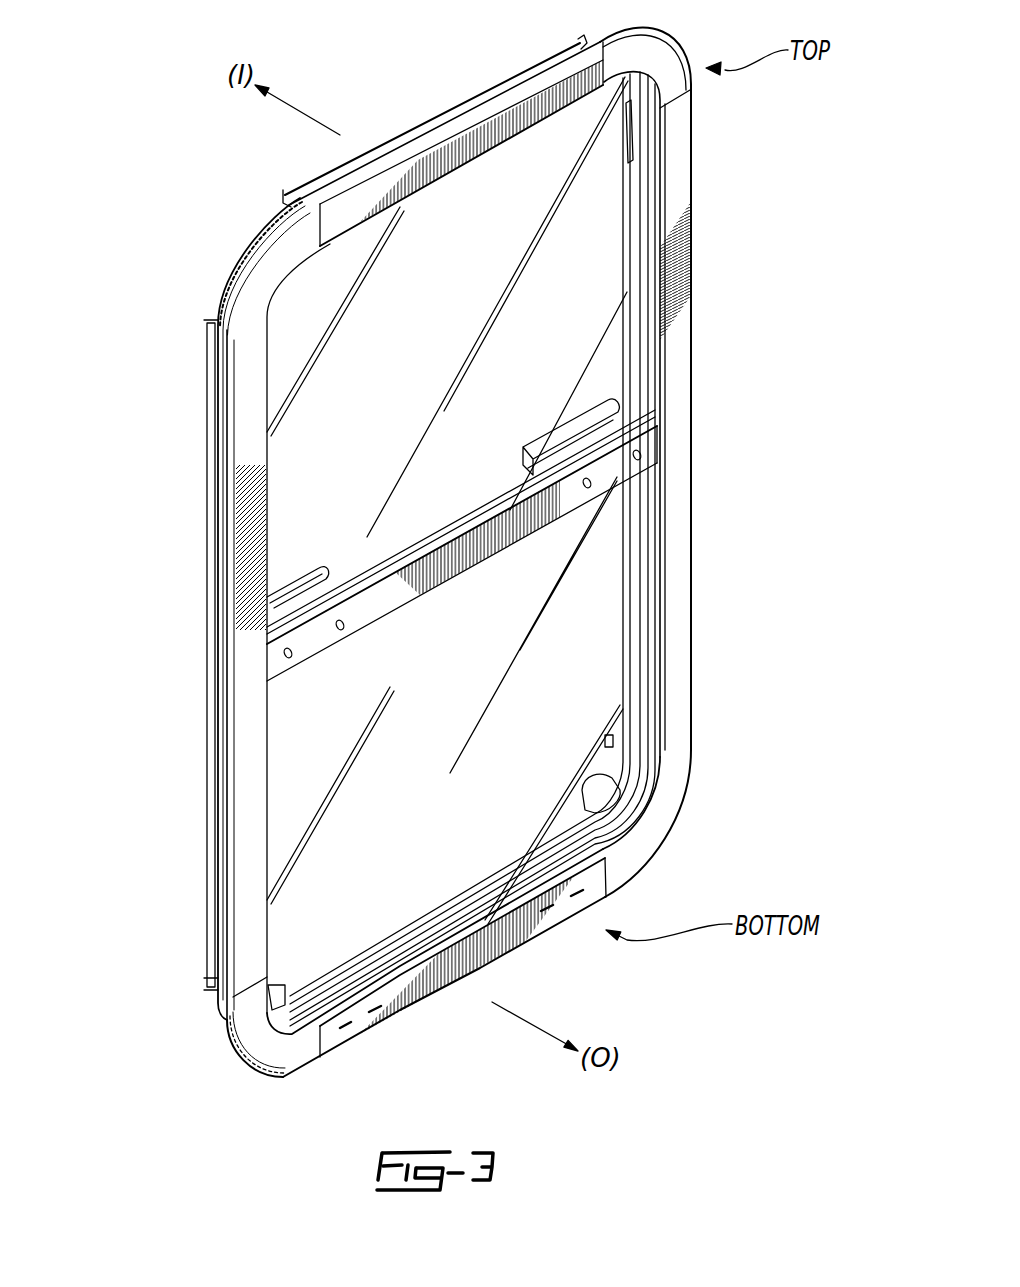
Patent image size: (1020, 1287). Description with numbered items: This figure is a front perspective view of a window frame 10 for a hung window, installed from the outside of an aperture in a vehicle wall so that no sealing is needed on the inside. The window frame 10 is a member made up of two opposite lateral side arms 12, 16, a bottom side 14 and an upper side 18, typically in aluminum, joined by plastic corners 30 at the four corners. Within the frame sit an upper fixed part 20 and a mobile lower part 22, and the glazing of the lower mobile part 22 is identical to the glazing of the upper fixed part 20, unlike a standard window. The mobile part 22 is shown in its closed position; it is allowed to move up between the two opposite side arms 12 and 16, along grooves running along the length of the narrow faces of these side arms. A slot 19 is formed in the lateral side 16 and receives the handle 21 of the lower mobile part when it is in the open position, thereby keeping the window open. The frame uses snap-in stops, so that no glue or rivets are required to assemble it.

The window frame 10 is at (160, 632).
The lateral side arm 12 is at (246, 822).
The bottom side 14 is at (383, 1010).
The lateral side arm 16 is at (672, 553).
The upper side 18 is at (503, 124).
The slot 19 is at (632, 124).
The fixed part 20 is at (415, 354).
The handle 21 is at (300, 598).
The mobile lower part 22 is at (532, 604).
The plastic corners 30 is at (262, 287).